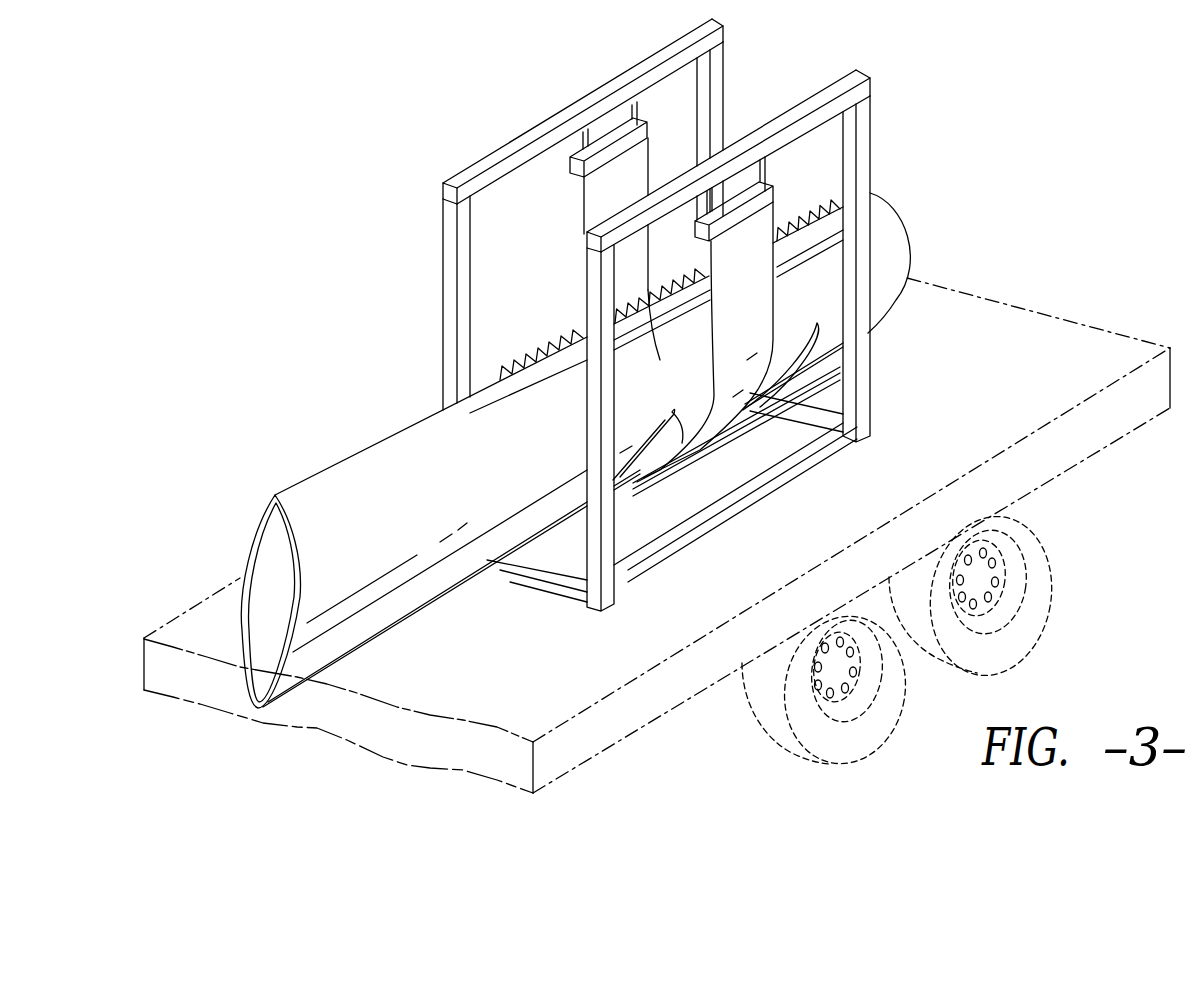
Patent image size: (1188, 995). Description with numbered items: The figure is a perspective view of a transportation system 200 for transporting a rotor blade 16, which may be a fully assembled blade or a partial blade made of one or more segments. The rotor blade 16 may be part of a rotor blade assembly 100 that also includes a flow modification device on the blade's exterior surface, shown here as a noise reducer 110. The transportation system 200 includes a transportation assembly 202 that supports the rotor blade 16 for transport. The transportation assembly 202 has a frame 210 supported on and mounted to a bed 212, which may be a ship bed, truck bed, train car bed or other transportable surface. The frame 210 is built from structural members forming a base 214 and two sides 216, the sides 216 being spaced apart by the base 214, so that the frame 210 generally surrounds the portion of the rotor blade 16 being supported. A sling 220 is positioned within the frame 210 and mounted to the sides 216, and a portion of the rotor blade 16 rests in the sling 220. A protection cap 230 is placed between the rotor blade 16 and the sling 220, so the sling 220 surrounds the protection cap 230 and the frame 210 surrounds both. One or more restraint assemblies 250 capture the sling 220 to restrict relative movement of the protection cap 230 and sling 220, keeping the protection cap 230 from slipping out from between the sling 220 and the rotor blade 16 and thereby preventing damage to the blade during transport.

The transportation system 200 is at (607, 317).
The rotor blade assembly 100 is at (562, 450).
The rotor blade 16 is at (377, 484).
The noise reducer 110 is at (464, 406).
The transportation assembly 202 is at (663, 315).
The frame 210 is at (844, 460).
The bed 212 is at (1017, 402).
The base 214 is at (730, 506).
The sides 216 is at (447, 284).
The sling 220 is at (792, 184).
The protection cap 230 is at (656, 475).
The restraint assembly 250 is at (748, 450).